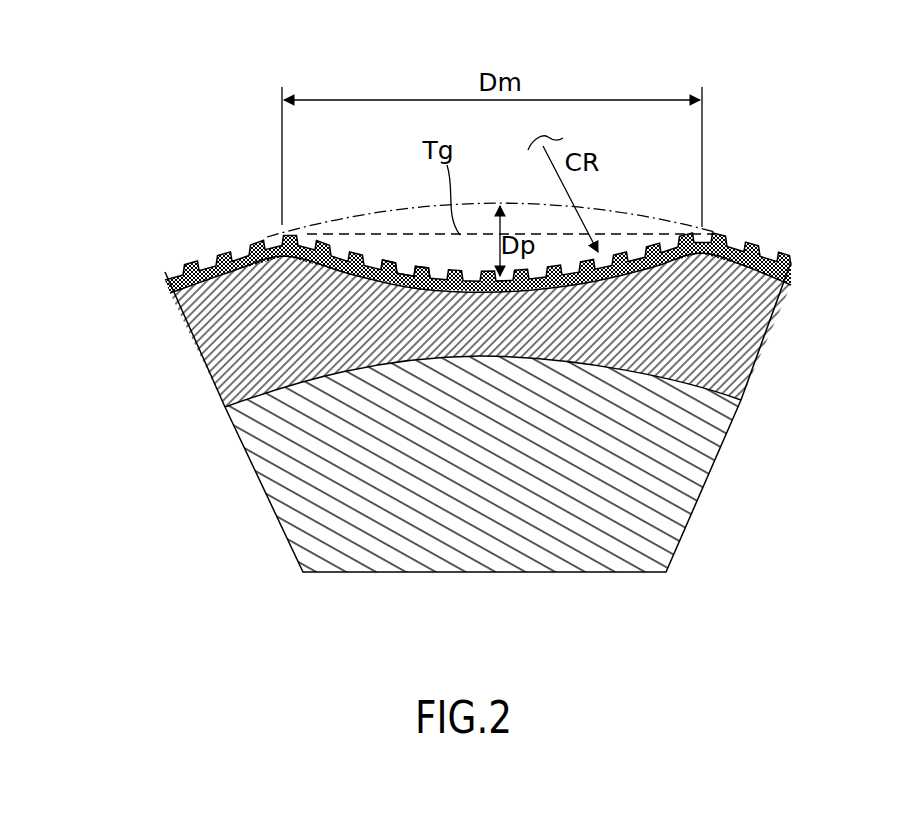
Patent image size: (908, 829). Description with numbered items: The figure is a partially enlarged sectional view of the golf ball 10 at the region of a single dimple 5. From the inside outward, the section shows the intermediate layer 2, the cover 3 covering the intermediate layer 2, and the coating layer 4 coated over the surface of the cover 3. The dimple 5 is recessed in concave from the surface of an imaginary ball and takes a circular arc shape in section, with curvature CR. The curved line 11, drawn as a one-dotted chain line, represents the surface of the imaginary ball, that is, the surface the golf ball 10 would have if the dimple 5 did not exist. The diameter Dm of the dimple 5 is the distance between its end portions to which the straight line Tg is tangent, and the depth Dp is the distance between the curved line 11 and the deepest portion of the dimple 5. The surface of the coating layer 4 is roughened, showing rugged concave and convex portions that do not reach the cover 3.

The golf ball 10 is at (773, 33).
The intermediate layer 2 is at (598, 475).
The cover 3 is at (693, 340).
The coating layer 4 is at (743, 246).
The dimple 5 is at (402, 250).
The curved line 11 is at (347, 218).